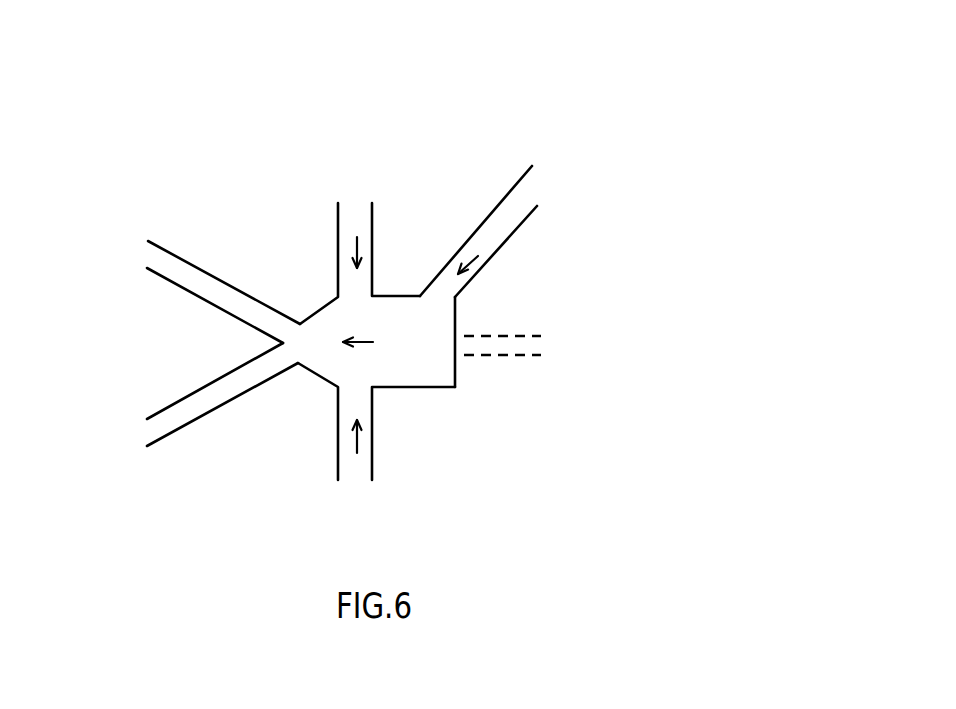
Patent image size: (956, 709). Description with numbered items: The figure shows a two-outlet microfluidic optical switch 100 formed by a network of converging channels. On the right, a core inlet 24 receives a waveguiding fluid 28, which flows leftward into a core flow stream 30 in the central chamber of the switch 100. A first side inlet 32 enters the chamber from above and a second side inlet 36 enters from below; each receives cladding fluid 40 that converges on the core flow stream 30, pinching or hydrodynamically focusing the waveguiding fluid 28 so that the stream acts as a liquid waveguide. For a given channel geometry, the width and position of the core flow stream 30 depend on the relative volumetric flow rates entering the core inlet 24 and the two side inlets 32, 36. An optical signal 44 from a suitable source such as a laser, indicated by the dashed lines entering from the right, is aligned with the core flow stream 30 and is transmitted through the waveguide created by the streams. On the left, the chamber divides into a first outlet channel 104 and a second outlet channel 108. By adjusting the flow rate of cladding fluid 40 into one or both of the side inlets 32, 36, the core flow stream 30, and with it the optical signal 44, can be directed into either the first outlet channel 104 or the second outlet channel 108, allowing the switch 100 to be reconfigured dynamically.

The two-outlet switch 100 is at (482, 102).
The core inlet 24 is at (548, 173).
The waveguiding fluid 28 is at (478, 256).
The core flow stream 30 is at (360, 344).
The first side inlet 32 is at (358, 197).
The second side inlet 36 is at (353, 488).
The cladding fluid 40 is at (365, 243).
The optical signal 44 is at (503, 357).
The first outlet channel 104 is at (135, 250).
The second outlet channel 108 is at (140, 437).